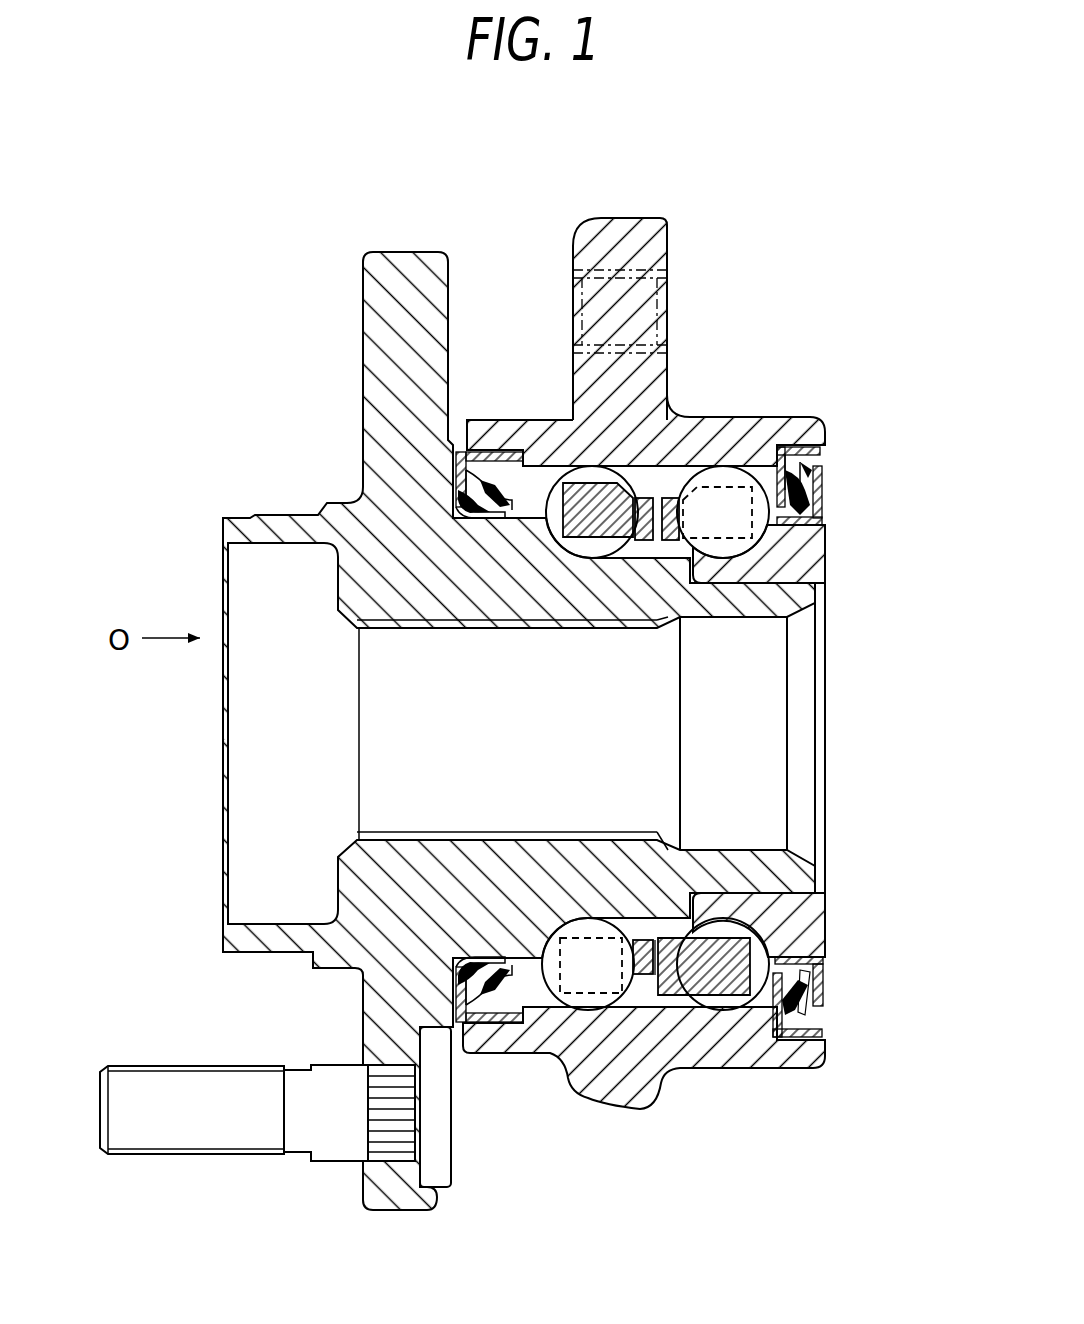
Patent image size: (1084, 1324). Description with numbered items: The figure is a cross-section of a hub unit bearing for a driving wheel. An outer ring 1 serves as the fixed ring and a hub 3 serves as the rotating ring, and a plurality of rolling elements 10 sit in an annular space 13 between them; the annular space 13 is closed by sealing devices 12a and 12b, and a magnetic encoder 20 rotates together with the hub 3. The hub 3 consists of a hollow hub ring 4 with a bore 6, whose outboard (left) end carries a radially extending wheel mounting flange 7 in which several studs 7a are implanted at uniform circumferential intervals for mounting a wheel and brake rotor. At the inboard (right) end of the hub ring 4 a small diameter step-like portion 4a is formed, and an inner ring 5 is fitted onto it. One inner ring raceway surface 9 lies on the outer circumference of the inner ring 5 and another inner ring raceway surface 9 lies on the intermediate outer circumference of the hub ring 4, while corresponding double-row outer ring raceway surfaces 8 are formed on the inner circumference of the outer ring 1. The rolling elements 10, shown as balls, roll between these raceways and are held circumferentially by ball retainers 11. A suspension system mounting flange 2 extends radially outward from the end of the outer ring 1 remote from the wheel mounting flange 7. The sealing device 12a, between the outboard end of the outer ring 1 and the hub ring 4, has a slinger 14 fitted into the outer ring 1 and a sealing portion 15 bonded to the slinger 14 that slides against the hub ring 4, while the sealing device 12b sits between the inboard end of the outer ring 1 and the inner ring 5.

The outer ring 1 is at (735, 420).
The suspension system mounting flange 2 is at (622, 232).
The hub 3 is at (368, 572).
The hub ring 4 is at (350, 900).
The small diameter step-like portion 4a is at (820, 870).
The inner ring 5 is at (800, 555).
The bore 6 is at (428, 832).
The wheel mounting flange 7 is at (360, 1190).
The stud 7a is at (178, 1140).
The outer ring raceway surface 8 is at (717, 1013).
The inner ring raceway surface 9 is at (594, 558).
The rolling element 10 is at (592, 483).
The ball retainer 11 is at (590, 960).
The sealing device 12a is at (470, 468).
The sealing device 12b is at (820, 464).
The annular space 13 is at (655, 932).
The slinger 14 is at (500, 1024).
The sealing portion 15 is at (448, 995).
The magnetic encoder 20 is at (828, 497).